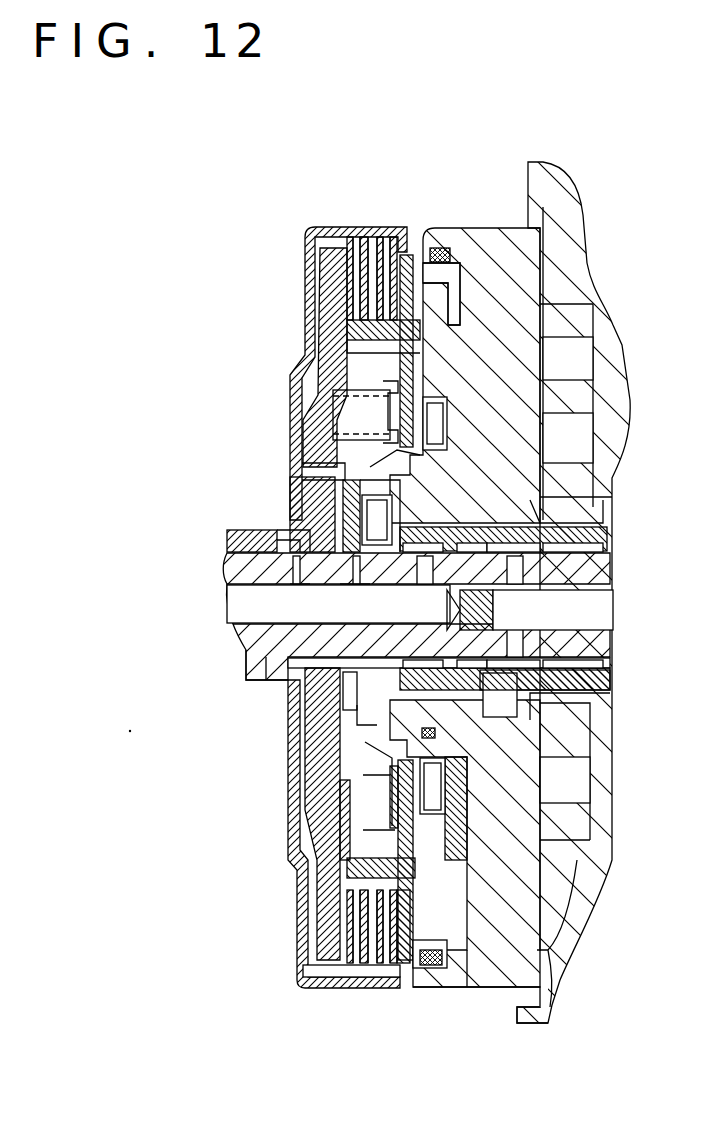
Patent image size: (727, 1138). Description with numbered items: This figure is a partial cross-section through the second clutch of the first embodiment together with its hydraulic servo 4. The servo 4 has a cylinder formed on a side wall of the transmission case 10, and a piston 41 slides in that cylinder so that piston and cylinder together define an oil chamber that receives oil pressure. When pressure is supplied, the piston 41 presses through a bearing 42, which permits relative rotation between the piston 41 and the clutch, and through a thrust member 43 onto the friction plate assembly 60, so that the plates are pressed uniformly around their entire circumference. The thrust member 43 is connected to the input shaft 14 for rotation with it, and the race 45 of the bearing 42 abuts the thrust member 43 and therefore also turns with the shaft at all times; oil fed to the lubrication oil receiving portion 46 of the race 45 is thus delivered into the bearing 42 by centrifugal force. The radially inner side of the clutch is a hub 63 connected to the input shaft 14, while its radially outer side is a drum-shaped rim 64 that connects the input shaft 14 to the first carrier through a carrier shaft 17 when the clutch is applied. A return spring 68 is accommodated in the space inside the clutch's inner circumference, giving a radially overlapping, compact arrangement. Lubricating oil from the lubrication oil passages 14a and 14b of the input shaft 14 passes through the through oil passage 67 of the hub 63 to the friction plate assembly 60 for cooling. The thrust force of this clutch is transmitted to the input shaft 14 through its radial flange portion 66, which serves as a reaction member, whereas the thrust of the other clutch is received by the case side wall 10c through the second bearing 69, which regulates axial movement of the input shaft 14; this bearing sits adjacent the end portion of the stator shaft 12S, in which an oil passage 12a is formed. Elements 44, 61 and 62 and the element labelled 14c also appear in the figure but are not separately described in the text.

The hydraulic servo 4 is at (430, 203).
The transmission case 10 is at (437, 228).
The side wall 10c is at (484, 987).
The piston 41 is at (467, 263).
The bearing 44 is at (462, 785).
The drum-shaped rim 64 is at (327, 227).
The piston 62 is at (310, 282).
The friction plates 61 is at (387, 228).
The hub 63 is at (362, 366).
The return spring 68 is at (312, 425).
The lubrication oil receiving portion 46 is at (300, 470).
The carrier shaft 17 is at (237, 531).
The input shaft 14 is at (227, 570).
The lubrication oil passage 14a is at (245, 615).
The lubrication oil passage 14b is at (297, 585).
The hub bore portion 14c is at (355, 585).
The oil passage 12a is at (415, 667).
The stator shaft 12S is at (603, 683).
The second bearing 69 is at (345, 688).
The radial flange portion 66 is at (290, 815).
The through oil passage 67 is at (298, 884).
The bearing 42 is at (388, 773).
The race 45 is at (396, 783).
The thrust member 43 is at (417, 847).
The friction plate assembly 60 is at (377, 977).